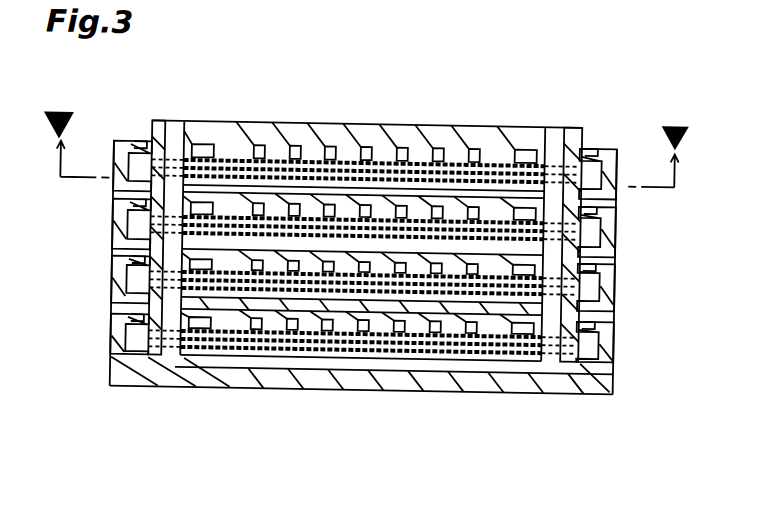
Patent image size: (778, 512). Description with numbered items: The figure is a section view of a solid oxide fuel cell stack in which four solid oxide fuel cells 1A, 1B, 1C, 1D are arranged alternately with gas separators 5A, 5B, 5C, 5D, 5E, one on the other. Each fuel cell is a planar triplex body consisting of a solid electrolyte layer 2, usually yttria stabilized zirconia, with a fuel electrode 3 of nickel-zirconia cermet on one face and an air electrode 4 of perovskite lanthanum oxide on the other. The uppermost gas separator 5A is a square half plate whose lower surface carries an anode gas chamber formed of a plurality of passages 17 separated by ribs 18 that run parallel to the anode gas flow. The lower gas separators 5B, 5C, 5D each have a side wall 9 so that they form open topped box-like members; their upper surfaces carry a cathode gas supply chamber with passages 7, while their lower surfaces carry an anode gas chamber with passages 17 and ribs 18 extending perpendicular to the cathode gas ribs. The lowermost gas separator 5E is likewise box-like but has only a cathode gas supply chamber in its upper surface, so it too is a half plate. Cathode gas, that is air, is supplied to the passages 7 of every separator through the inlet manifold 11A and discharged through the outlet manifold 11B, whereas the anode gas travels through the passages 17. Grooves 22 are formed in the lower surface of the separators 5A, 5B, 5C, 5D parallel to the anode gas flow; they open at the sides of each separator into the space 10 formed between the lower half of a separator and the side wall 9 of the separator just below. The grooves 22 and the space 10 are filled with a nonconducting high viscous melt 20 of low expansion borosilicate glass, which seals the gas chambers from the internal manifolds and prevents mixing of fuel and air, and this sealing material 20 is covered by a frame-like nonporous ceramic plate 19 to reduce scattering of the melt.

The solid oxide fuel cell 1A is at (488, 160).
The solid oxide fuel cell 1B is at (612, 233).
The solid oxide fuel cell 1C is at (492, 350).
The solid oxide fuel cell 1D is at (321, 460).
The solid electrolyte layer 2 is at (291, 392).
The fuel electrode 3 is at (263, 391).
The air electrode 4 is at (321, 392).
The uppermost gas separator 5A is at (382, 136).
The lower gas separator 5B is at (228, 196).
The lower gas separator 5C is at (219, 391).
The lower gas separator 5D is at (180, 391).
The lowermost gas separator 5E is at (146, 391).
The passages 7 is at (442, 176).
The side wall 9 is at (121, 292).
The space 10 is at (598, 320).
The inlet manifold 11A is at (169, 66).
The outlet manifold 11B is at (558, 126).
The passages 17 is at (314, 147).
The ribs 18 is at (418, 163).
The frame-like nonporous ceramic plate 19 is at (140, 146).
The sealing material 20 is at (134, 226).
The grooves 22 is at (200, 148).